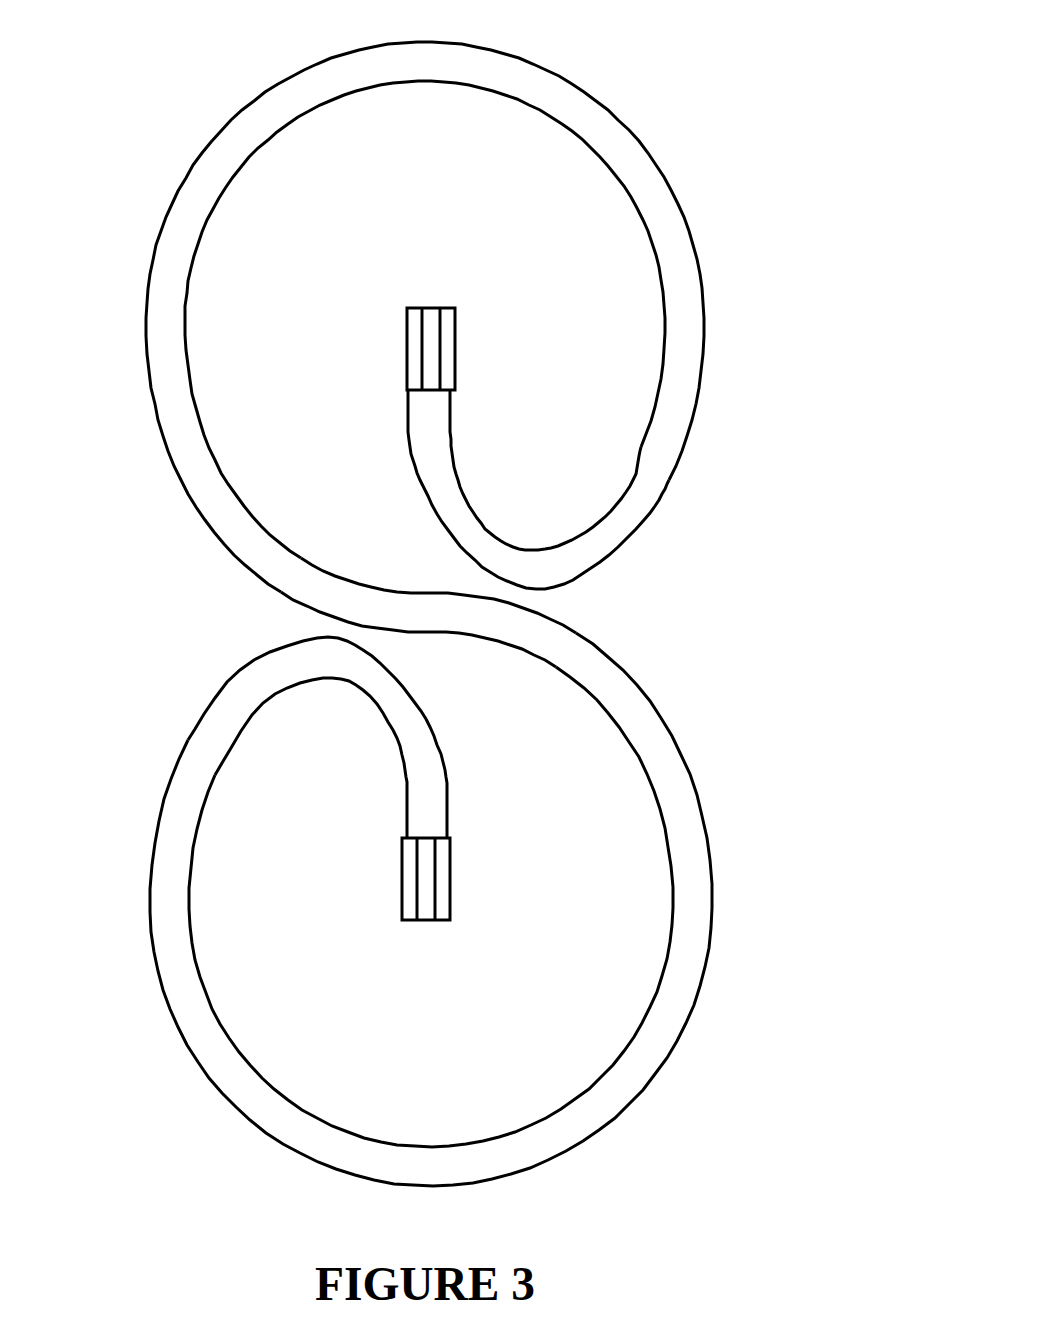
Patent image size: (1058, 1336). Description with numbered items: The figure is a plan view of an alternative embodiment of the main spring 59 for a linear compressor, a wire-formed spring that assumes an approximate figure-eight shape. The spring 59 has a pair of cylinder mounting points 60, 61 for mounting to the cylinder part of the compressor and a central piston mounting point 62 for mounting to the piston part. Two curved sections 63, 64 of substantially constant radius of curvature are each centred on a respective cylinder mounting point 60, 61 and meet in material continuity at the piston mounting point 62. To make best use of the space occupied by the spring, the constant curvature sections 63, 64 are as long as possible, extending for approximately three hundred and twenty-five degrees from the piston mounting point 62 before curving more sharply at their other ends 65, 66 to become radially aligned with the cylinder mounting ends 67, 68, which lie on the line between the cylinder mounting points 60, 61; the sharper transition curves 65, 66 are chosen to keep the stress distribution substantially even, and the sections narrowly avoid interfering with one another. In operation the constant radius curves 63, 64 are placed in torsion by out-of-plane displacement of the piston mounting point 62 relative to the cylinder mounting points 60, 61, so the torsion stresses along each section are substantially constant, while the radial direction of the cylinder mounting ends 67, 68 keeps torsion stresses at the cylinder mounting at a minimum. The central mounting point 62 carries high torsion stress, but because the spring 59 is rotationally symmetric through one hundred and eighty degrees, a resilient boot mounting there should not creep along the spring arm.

The spring 59 is at (652, 587).
The cylinder mounting point 60 is at (430, 320).
The cylinder mounting point 61 is at (425, 903).
The piston mounting point 62 is at (433, 615).
The curved section 63 is at (517, 55).
The curved section 64 is at (598, 1118).
The transition curve 65 is at (527, 557).
The transition curve 66 is at (313, 667).
The cylinder mounting end 67 is at (455, 357).
The cylinder mounting end 68 is at (402, 895).